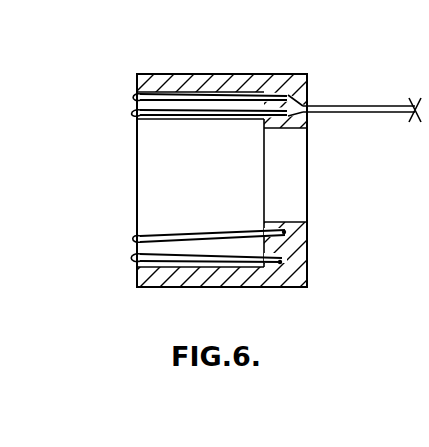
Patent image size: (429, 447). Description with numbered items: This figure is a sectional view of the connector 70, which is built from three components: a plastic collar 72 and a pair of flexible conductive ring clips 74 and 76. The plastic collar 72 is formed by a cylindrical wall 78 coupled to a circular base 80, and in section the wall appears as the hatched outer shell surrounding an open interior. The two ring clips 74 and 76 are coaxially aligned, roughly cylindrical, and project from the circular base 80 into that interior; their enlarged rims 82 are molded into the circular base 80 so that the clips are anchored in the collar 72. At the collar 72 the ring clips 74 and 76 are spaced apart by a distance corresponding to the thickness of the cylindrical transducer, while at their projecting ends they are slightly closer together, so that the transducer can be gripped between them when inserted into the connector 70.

The connector 70 is at (311, 72).
The plastic collar 72 is at (153, 70).
The ring clip 74 is at (132, 97).
The ring clip 76 is at (131, 117).
The cylindrical wall 78 is at (192, 72).
The circular base 80 is at (275, 83).
The enlarged rims 82 is at (284, 232).